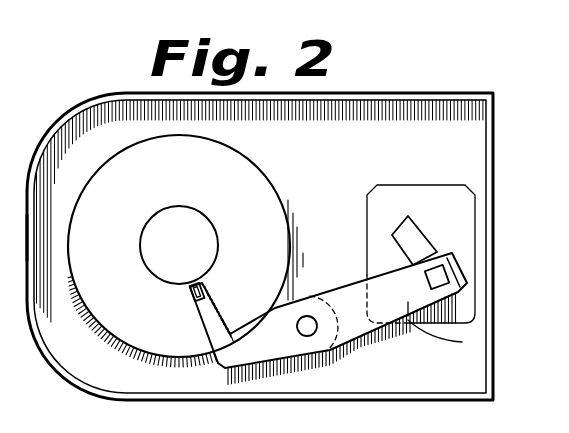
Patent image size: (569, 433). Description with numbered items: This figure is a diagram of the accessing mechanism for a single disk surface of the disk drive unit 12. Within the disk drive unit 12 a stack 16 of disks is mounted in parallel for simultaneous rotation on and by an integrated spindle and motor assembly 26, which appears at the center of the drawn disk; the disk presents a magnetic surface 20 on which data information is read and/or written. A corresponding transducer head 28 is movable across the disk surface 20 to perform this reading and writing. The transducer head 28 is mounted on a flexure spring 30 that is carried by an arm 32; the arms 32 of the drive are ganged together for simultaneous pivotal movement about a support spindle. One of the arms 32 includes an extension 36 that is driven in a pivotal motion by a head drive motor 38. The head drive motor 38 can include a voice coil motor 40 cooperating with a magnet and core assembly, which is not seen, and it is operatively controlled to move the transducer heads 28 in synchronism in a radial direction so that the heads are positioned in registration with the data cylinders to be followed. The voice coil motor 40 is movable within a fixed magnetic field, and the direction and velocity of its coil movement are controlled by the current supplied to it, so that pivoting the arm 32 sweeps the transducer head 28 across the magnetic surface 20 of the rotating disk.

The disk drive unit 12 is at (432, 85).
The stack 16 is at (52, 226).
The magnetic surface 20 is at (132, 162).
The integrated spindle and motor assembly 26 is at (194, 257).
The transducer head 28 is at (194, 296).
The flexure spring 30 is at (210, 322).
The arm 32 is at (246, 363).
The extension 36 is at (462, 342).
The head drive motor 38 is at (450, 193).
The voice coil motor 40 is at (440, 277).